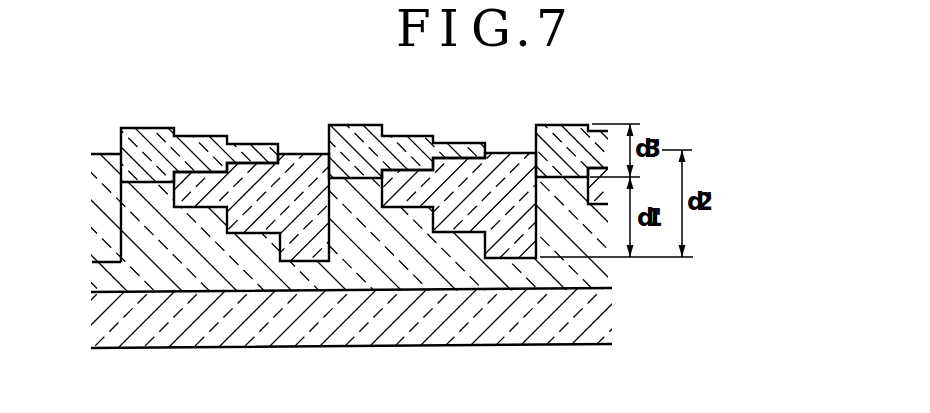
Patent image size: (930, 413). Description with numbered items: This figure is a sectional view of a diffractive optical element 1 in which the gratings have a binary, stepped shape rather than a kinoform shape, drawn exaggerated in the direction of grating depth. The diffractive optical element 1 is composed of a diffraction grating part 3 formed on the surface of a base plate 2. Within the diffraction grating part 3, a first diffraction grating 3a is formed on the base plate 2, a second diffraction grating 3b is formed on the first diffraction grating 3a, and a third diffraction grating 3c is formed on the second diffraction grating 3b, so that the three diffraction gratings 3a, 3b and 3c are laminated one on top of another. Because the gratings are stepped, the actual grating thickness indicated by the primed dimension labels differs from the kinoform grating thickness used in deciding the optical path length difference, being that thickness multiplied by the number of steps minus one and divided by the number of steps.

The diffractive optical element 1 is at (807, 192).
The base plate 2 is at (592, 312).
The diffraction grating part 3 is at (745, 122).
The first diffraction grating 3a is at (137, 272).
The second diffraction grating 3b is at (300, 182).
The third diffraction grating 3c is at (197, 145).